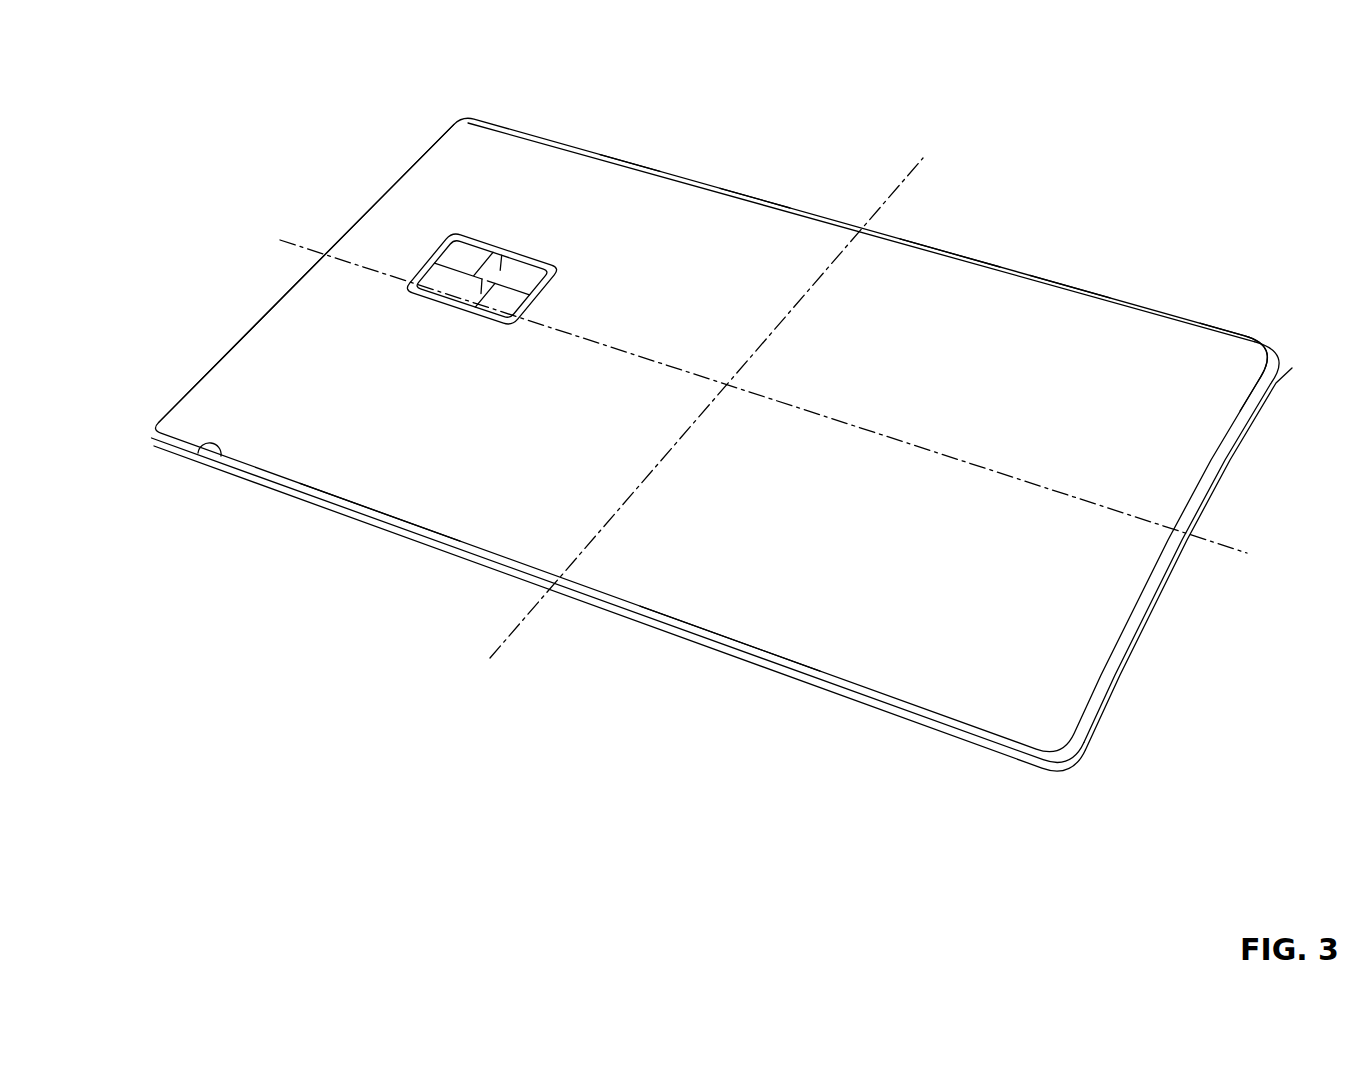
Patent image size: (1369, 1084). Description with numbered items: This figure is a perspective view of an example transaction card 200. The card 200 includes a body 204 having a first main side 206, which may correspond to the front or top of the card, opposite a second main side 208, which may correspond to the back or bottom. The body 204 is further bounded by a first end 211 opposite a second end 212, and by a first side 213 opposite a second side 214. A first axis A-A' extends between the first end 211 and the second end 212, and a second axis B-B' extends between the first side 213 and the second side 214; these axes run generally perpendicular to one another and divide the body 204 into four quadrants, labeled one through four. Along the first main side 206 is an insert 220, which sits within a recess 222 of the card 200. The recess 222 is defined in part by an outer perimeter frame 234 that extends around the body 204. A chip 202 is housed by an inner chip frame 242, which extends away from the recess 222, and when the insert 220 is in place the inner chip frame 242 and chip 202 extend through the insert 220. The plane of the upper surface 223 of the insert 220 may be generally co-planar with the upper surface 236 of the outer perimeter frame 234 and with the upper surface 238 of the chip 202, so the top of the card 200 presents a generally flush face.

The transaction card 200 is at (172, 96).
The chip 202 is at (433, 242).
The body 204 is at (550, 125).
The first main side 206 is at (1067, 317).
The second main side 208 is at (962, 738).
The first end 211 is at (356, 210).
The second end 212 is at (1118, 690).
The first side 213 is at (728, 656).
The second side 214 is at (969, 250).
The insert 220 is at (1188, 362).
The recess 222 is at (199, 452).
The upper surface of the insert 223 is at (625, 197).
The outer perimeter frame 234 is at (393, 532).
The upper surface of the outer perimeter frame 236 is at (753, 203).
The upper surface of the chip 238 is at (530, 277).
The inner chip frame 242 is at (553, 287).